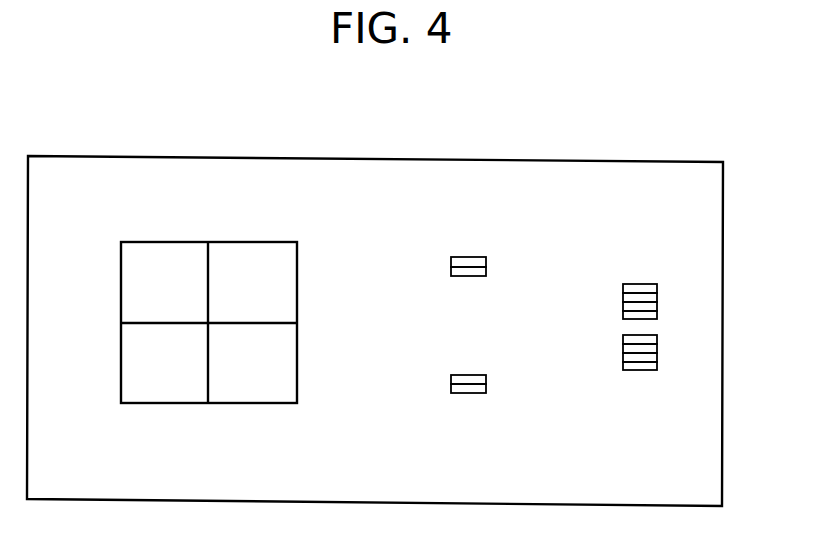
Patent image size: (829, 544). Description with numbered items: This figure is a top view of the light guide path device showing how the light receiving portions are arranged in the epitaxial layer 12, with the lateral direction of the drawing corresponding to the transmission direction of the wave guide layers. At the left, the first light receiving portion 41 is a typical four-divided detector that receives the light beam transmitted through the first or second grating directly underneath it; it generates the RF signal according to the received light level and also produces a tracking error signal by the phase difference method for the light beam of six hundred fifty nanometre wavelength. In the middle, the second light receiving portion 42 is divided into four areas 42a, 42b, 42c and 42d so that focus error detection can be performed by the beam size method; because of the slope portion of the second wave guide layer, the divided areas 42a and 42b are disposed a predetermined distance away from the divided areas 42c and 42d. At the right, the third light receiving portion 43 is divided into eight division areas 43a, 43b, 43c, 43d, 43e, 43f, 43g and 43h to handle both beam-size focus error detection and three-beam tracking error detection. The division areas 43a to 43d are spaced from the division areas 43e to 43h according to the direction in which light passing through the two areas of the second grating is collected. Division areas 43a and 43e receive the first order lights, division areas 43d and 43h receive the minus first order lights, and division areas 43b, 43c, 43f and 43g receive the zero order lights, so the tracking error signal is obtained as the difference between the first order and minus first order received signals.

The epitaxial layer 12 is at (426, 157).
The first light receiving portion 41 is at (211, 224).
The second light receiving portion 42 is at (466, 226).
The divided area 42a is at (487, 261).
The divided area 42b is at (487, 271).
The divided area 42c is at (487, 379).
The divided area 42d is at (487, 389).
The third light receiving portion 43 is at (649, 226).
The division area 43a is at (657, 288).
The division area 43b is at (657, 297).
The division area 43c is at (657, 306).
The division area 43d is at (657, 315).
The division area 43e is at (657, 339).
The division area 43f is at (657, 348).
The division area 43g is at (657, 357).
The division area 43h is at (657, 366).